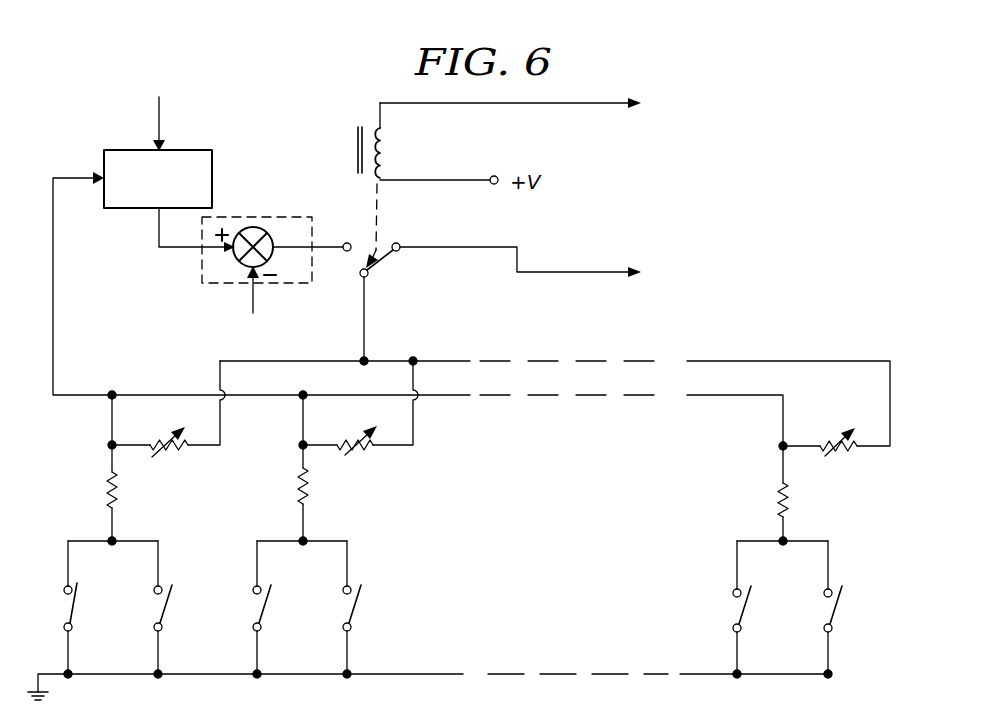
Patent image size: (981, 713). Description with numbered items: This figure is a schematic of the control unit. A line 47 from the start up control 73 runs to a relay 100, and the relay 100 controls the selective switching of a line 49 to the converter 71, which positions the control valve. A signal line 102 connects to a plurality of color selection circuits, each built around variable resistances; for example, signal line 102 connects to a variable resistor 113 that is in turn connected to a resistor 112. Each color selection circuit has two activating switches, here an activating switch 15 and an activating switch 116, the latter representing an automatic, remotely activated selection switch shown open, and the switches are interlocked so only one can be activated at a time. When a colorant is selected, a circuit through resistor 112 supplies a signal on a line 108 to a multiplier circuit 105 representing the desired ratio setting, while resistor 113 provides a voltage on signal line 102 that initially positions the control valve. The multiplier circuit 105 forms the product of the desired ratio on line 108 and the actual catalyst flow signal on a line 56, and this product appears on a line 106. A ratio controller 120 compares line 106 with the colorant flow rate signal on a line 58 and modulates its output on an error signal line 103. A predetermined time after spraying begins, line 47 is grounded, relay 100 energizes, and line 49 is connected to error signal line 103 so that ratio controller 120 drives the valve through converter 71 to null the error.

The switch 15 is at (68, 601).
The line 47 is at (606, 105).
The line 49 is at (548, 272).
The line 56 is at (162, 122).
The line 58 is at (251, 297).
The converter 71 is at (755, 273).
The start up control 73 is at (793, 106).
The relay 100 is at (388, 150).
The signal line 102 is at (366, 312).
The error signal line 103 is at (331, 246).
The multiplier circuit 105 is at (158, 179).
The line 106 is at (157, 232).
The line 108 is at (55, 313).
The resistor 112 is at (106, 485).
The variable resistor 113 is at (176, 447).
The activating switch 116 is at (172, 590).
The ratio controller 120 is at (208, 216).